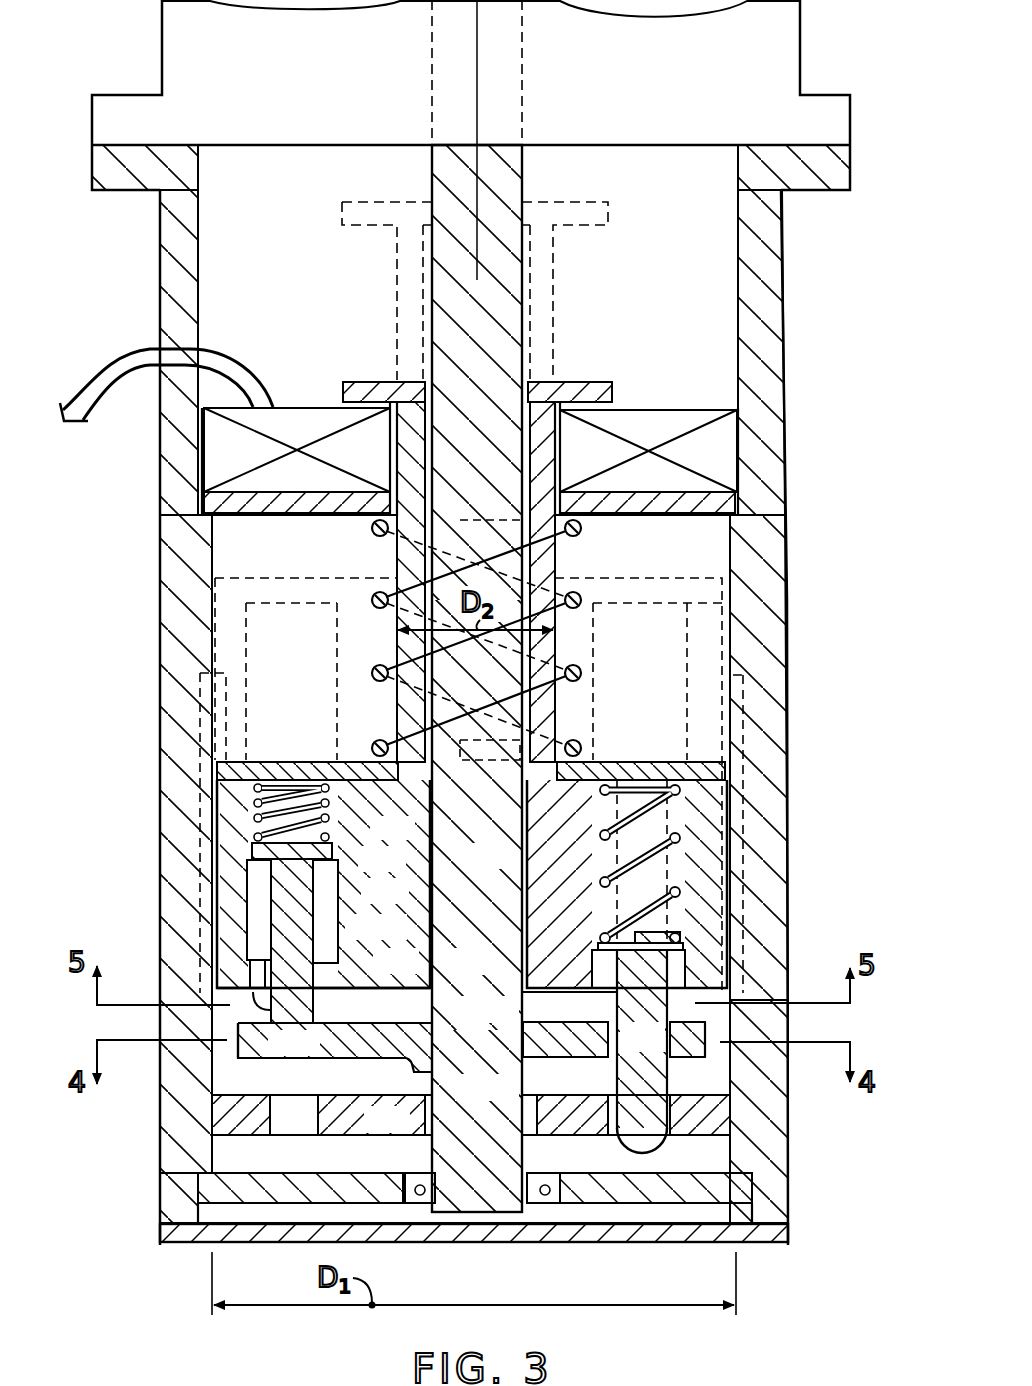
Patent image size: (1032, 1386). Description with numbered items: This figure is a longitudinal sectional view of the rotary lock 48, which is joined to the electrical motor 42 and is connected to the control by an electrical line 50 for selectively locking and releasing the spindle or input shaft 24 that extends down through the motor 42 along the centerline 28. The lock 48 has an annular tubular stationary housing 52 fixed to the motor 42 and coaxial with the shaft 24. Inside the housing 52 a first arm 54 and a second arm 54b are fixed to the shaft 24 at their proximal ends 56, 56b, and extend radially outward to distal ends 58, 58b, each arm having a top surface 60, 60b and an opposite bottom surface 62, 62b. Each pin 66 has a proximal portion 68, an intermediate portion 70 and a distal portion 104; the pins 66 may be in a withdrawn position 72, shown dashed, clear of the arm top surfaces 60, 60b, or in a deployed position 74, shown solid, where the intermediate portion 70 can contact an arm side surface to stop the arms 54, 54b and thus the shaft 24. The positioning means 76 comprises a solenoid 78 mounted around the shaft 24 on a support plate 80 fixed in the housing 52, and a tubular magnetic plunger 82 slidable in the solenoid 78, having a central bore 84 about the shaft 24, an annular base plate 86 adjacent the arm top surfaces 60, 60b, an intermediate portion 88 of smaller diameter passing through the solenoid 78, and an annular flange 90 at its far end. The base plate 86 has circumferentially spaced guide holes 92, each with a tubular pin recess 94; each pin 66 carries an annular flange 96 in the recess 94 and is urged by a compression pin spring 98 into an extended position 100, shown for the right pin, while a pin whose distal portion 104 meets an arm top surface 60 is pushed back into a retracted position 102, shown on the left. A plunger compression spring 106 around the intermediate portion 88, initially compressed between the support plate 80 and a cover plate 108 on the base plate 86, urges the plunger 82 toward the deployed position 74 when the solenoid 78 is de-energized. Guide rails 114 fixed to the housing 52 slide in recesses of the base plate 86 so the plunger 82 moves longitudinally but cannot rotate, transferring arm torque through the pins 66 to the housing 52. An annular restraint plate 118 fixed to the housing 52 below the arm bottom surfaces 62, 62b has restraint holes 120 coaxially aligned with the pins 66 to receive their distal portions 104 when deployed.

The spindle 24 is at (522, 165).
The centerline 28 is at (477, 22).
The electrical motor 42 is at (808, 58).
The rotary lock 48 is at (803, 587).
The electrical line 50 is at (93, 380).
The stationary housing 52 is at (784, 292).
The first arm 54 is at (385, 1062).
The second arm 54b is at (570, 1067).
The proximal end 56 is at (425, 1000).
The proximal end 56b is at (555, 1018).
The distal end 58 is at (238, 1058).
The distal end 58b is at (718, 1040).
The top surface 60 is at (330, 1020).
The top surface 60b is at (705, 1018).
The bottom surface 62 is at (303, 1063).
The bottom surface 62b is at (713, 1068).
The pin 66 is at (326, 905).
The proximal portion 68 is at (318, 874).
The intermediate portion 70 is at (662, 1050).
The withdrawn position 72 is at (690, 962).
The deployed position 74 is at (617, 1162).
The positioning means 76 is at (345, 557).
The solenoid 78 is at (730, 450).
The support plate 80 is at (740, 505).
The magnetic plunger 82 is at (574, 380).
The central bore 84 is at (432, 392).
The base plate 86 is at (540, 866).
The intermediate portion 88 is at (555, 565).
The annular flange 90 is at (612, 392).
The guide hole 92 is at (335, 1047).
The pin recess 94 is at (255, 896).
The annular flange 96 is at (345, 842).
The compression pin spring 98 is at (282, 786).
The extended position 100 is at (623, 1135).
The retracted position 102 is at (245, 865).
The distal portion 104 is at (347, 988).
The plunger compression spring 106 is at (585, 672).
The cover plate 108 is at (637, 760).
The guide rail 114 is at (200, 700).
The restraint plate 118 is at (245, 1130).
The restraint hole 120 is at (310, 1130).